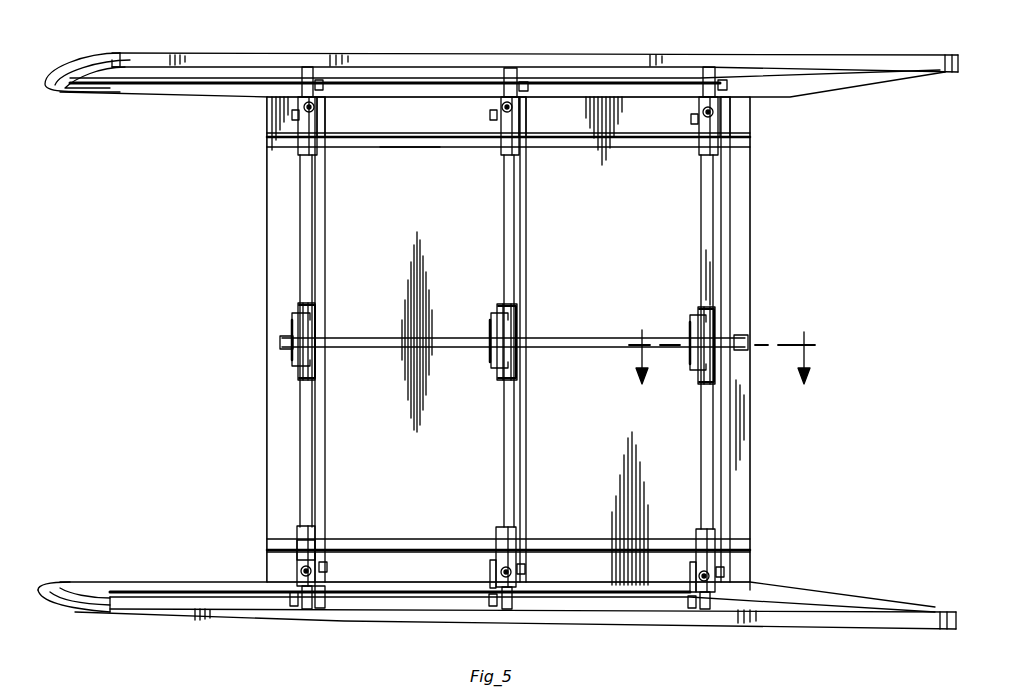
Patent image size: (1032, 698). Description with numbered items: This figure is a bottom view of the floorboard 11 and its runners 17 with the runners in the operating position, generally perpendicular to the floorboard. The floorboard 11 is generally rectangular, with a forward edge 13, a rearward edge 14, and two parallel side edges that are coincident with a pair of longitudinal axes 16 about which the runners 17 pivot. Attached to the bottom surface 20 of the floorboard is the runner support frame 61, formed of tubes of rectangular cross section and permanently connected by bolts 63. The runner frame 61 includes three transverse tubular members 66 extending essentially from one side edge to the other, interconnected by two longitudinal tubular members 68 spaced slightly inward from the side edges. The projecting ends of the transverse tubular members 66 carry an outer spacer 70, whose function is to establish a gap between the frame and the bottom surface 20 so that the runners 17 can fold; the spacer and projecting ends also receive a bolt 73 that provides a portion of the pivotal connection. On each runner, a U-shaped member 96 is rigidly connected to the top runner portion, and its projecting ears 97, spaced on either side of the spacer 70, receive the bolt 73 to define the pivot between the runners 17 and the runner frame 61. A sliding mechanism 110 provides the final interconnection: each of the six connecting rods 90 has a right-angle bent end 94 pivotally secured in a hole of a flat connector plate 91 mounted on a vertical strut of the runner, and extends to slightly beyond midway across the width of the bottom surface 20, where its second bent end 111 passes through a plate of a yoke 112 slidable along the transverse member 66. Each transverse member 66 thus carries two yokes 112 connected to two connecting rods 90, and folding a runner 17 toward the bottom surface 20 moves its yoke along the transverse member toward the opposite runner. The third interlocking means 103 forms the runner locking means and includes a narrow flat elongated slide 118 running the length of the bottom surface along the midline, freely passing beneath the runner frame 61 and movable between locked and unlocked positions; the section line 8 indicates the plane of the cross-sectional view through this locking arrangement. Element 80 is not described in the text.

The section line 8- 8 is at (722, 360).
The floorboard 11 is at (588, 247).
The forward edge 13 is at (265, 268).
The rearward edge 14 is at (752, 462).
The longitudinal axes 16 is at (935, 80).
The runners 17 is at (208, 53).
The bottom surface 20 is at (277, 370).
The runner support frame 61 is at (410, 147).
The bolts 63 is at (292, 110).
The transverse tubular members 66 is at (307, 228).
The longitudinal tubular members 68 is at (393, 133).
The outer spacer 70 is at (300, 140).
The bolt 73 is at (292, 116).
The runner upturned tip 80 is at (125, 60).
The connecting rod 90 is at (328, 246).
The connector plate 91 is at (316, 68).
The bent end 94 is at (335, 78).
The U-shaped member 96 is at (328, 112).
The projecting ear 97 is at (297, 558).
The third interlocking means 103 is at (240, 349).
The sliding mechanism 110 is at (336, 324).
The second bent end 111 is at (292, 314).
The yoke 112 is at (495, 305).
The slide 118 is at (372, 348).